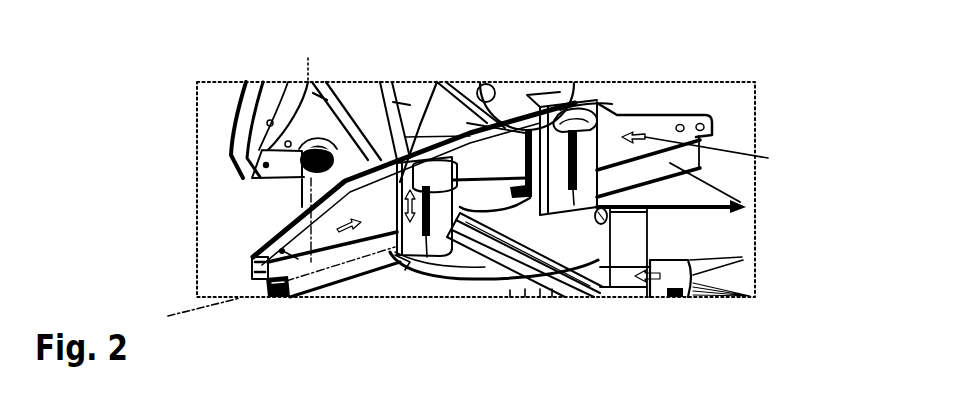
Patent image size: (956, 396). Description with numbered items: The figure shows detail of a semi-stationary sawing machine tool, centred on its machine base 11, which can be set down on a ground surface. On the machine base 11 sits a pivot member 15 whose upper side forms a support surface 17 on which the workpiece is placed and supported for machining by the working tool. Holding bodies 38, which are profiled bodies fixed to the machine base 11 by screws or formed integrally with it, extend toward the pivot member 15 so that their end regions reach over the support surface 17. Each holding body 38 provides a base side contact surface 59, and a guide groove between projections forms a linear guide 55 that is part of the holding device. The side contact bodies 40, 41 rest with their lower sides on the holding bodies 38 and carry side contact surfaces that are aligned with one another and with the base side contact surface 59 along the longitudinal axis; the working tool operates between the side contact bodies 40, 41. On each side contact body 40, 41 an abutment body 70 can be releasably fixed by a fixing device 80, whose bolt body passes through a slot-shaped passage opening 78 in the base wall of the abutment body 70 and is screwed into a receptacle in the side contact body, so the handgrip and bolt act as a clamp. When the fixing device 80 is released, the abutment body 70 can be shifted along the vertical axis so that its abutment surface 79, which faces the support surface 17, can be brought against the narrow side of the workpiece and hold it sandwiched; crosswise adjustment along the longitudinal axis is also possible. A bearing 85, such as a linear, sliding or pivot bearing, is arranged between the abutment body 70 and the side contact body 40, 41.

The machine base 11 is at (762, 275).
The pivot member 15 is at (486, 303).
The support surface 17 is at (463, 262).
The holding body 38 is at (270, 292).
The side contact body 40 is at (232, 249).
The side contact body 41 is at (733, 96).
The linear guide 55 is at (244, 246).
The base side contact surface 59 is at (282, 297).
The abutment body 70 is at (372, 240).
The passage opening 78 is at (423, 233).
The abutment surface 79 is at (405, 262).
The fixing device 80 is at (333, 181).
The bearing 85 is at (610, 98).